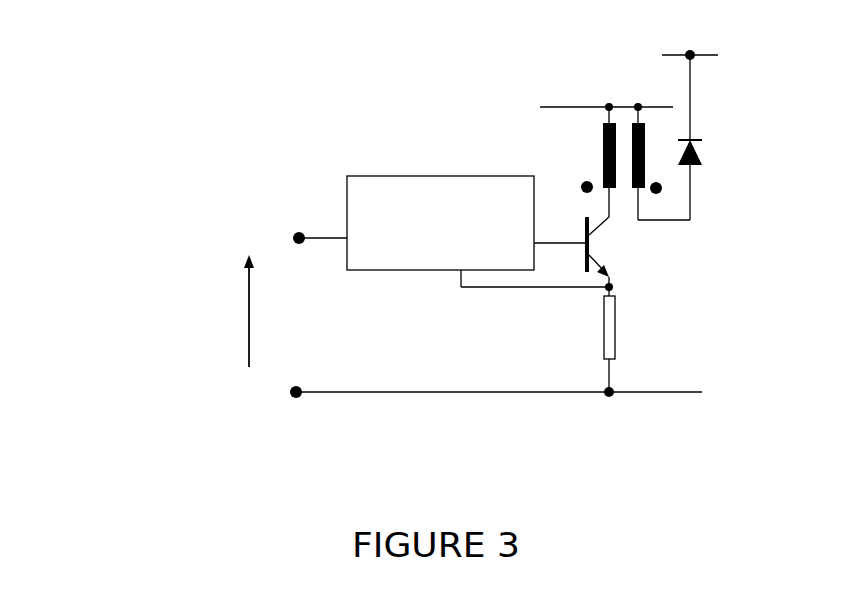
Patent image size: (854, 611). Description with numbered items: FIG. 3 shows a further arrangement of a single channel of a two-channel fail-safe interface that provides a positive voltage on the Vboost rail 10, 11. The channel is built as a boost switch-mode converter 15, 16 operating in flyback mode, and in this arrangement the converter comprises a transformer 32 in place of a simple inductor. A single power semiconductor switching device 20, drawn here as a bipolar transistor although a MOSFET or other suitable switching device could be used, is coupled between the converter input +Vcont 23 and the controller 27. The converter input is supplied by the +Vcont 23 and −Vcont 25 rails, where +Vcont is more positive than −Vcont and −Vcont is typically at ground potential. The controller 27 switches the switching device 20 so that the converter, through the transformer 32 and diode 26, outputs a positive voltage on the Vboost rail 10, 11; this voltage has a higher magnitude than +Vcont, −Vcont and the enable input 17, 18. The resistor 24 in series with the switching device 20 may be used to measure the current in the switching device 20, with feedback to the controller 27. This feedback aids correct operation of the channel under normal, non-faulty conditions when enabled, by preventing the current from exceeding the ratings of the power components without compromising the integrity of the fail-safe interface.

The Vboost rail 10 is at (679, 34).
The Vboost rail 11 is at (710, 74).
The boost switch-mode converter 15 is at (322, 134).
The boost switch-mode converter 16 is at (322, 134).
The enable input 17 is at (193, 311).
The enable input 18 is at (223, 316).
The power semiconductor switching device 20 is at (598, 254).
The +Vcont rail 23 is at (606, 142).
The resistor 24 is at (637, 339).
The −Vcont rail 25 is at (496, 370).
The diode 26 is at (695, 176).
The controller 27 is at (451, 231).
The transformer 32 is at (602, 163).